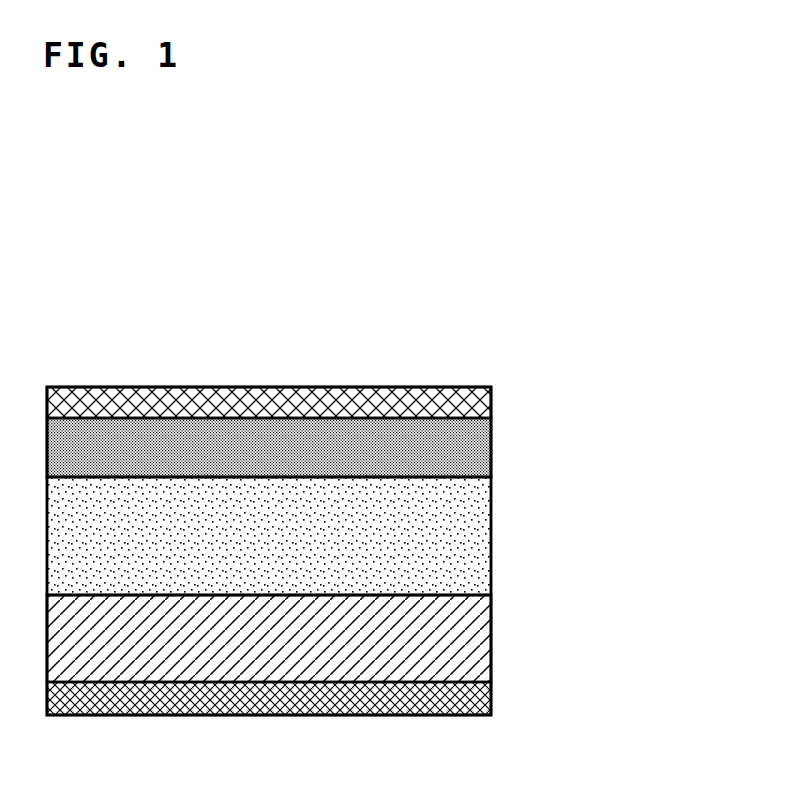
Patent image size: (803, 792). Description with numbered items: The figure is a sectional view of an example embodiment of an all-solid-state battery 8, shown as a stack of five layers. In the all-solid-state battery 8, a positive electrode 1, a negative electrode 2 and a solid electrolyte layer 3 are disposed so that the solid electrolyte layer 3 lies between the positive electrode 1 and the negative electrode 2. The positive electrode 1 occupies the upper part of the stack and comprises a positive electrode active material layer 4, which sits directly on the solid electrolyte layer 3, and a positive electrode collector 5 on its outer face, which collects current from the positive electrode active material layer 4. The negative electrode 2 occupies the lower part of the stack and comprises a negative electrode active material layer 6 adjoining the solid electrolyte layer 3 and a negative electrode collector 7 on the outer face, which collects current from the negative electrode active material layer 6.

The positive electrode 1 is at (681, 375).
The negative electrode 2 is at (681, 624).
The solid electrolyte layer 3 is at (478, 538).
The positive electrode active material layer 4 is at (478, 450).
The positive electrode collector 5 is at (478, 403).
The negative electrode active material layer 6 is at (478, 651).
The negative electrode collector 7 is at (478, 698).
The all-solid-state battery 8 is at (533, 288).